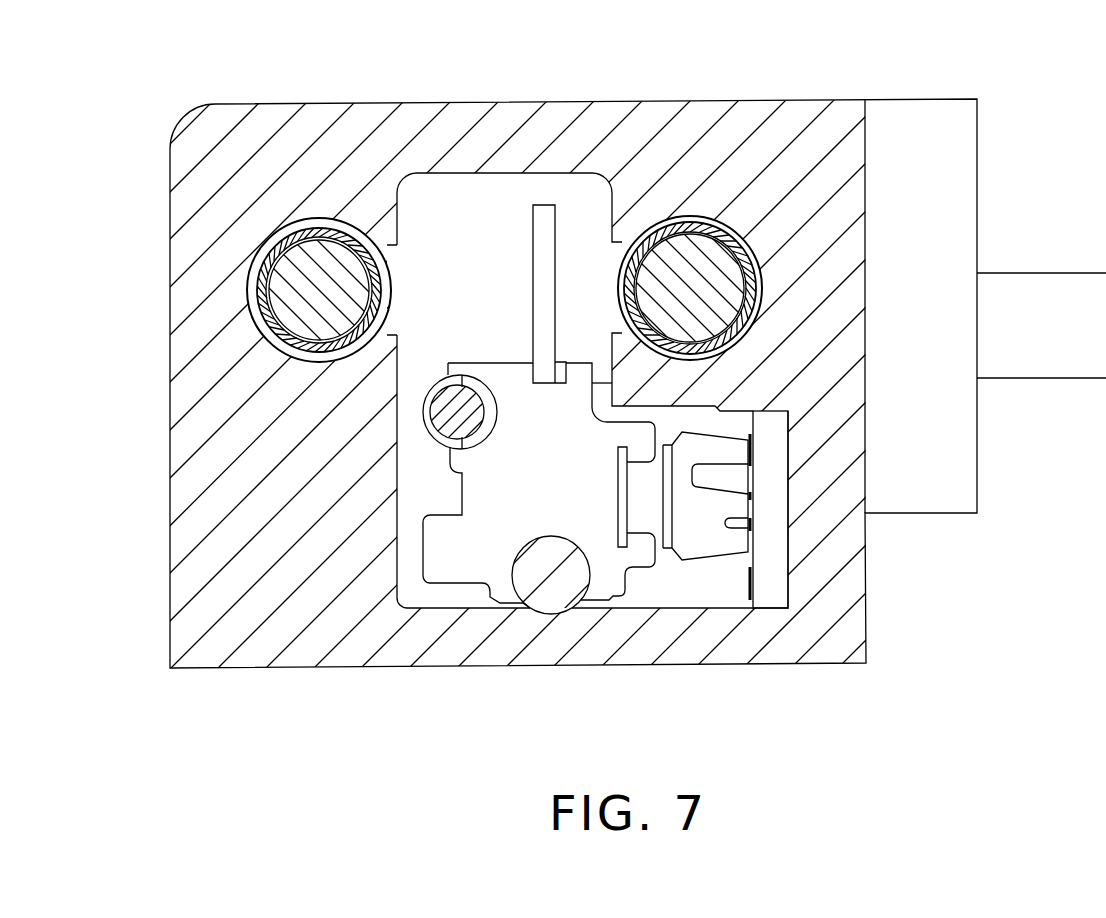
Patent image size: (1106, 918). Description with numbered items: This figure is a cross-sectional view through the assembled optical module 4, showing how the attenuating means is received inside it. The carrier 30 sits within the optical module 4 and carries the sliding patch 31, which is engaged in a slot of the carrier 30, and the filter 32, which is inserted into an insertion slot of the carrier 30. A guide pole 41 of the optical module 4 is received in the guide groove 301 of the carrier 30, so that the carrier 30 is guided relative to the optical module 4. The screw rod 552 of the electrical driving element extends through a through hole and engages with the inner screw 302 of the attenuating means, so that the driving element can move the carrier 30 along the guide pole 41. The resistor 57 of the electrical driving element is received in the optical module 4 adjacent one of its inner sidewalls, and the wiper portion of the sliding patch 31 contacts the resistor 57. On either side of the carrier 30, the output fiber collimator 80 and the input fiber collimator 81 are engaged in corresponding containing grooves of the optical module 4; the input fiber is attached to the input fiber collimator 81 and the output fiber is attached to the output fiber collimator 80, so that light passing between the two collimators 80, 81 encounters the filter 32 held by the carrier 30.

The optical module 4 is at (752, 137).
The output fiber collimator 80 is at (303, 302).
The input fiber collimator 81 is at (703, 290).
The filter 32 is at (545, 222).
The carrier 30 is at (462, 557).
The guide groove 301 is at (505, 597).
The inner screw 302 is at (467, 376).
The screw rod 552 is at (436, 437).
The guide pole 41 is at (557, 588).
The sliding patch 31 is at (703, 533).
The resistor 57 is at (773, 587).